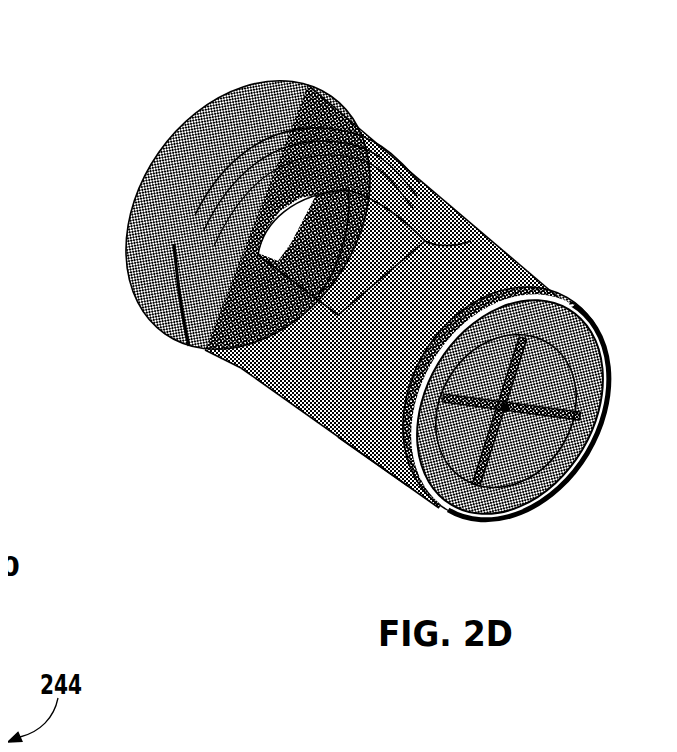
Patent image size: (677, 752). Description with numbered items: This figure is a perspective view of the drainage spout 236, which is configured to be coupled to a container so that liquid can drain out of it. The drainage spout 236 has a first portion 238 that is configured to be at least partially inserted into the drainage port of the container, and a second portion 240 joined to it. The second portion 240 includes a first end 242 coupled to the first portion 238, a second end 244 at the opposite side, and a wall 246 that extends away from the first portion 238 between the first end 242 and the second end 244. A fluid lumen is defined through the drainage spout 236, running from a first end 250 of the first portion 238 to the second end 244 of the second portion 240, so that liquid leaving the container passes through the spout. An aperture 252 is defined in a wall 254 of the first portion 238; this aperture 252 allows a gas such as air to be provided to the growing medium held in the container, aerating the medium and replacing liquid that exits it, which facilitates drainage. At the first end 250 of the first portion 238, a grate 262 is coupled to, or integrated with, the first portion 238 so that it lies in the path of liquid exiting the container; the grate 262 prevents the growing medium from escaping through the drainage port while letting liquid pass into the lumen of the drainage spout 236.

The drainage spout 236 is at (116, 74).
The first portion 238 is at (519, 245).
The second portion 240 is at (326, 72).
The first end 242 is at (209, 346).
The second end 244 is at (102, 270).
The wall 246 is at (148, 184).
The first end 250 is at (473, 402).
The aperture 252 is at (347, 270).
The wall 254 is at (337, 398).
The grate 262 is at (507, 478).